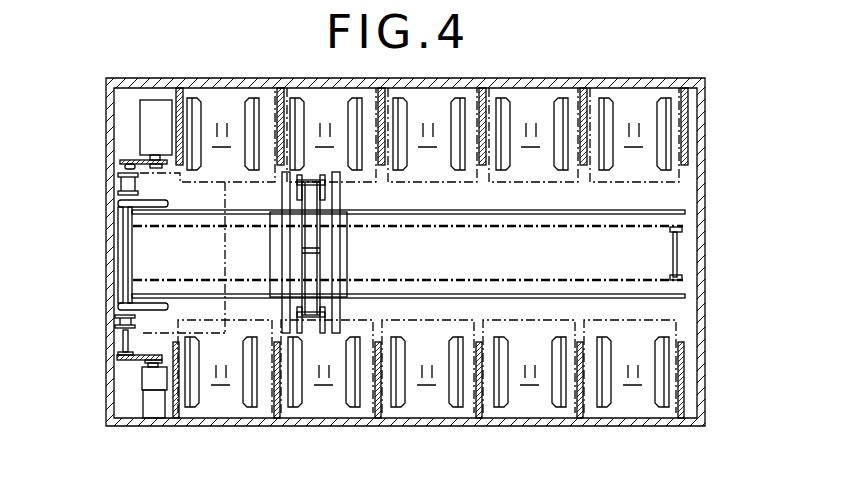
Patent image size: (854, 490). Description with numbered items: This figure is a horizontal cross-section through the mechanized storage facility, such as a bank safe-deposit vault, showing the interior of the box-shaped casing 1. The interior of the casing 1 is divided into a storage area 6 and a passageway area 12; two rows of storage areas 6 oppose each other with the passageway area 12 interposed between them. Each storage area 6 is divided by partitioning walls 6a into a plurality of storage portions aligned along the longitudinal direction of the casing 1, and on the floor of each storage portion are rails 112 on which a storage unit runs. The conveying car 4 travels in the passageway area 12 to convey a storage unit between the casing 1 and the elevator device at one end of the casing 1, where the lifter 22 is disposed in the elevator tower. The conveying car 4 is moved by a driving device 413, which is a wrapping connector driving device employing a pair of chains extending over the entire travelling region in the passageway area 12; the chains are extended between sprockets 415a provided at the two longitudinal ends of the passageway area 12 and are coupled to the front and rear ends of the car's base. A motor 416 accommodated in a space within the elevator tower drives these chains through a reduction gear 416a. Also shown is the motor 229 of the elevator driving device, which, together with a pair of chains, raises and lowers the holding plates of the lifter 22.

The casing 1 is at (182, 74).
The storage area 6 is at (716, 92).
The partitioning wall 6a is at (376, 382).
The rail 112 is at (553, 112).
The passageway area 12 is at (452, 264).
The lifter 22 is at (113, 252).
The conveying car 4 is at (356, 254).
The motor 229 is at (152, 125).
The driving device 413 is at (114, 342).
The reduction gear 416a is at (150, 377).
The motor 416 is at (158, 410).
The sprocket 415a is at (679, 255).